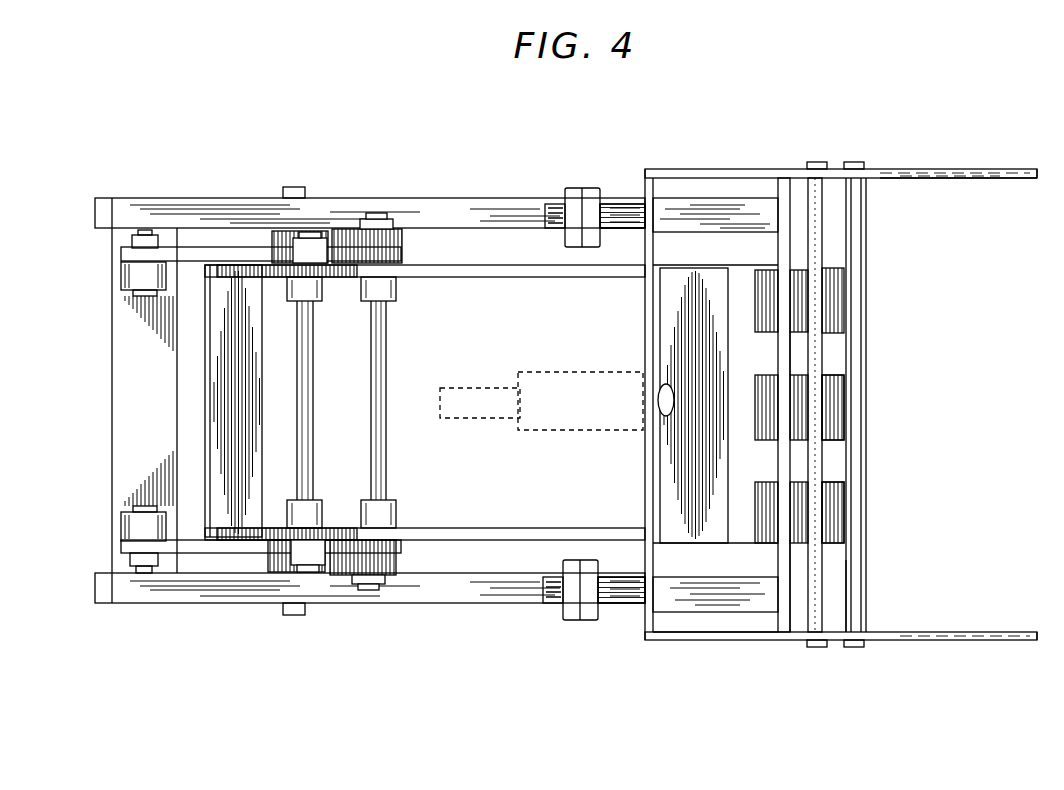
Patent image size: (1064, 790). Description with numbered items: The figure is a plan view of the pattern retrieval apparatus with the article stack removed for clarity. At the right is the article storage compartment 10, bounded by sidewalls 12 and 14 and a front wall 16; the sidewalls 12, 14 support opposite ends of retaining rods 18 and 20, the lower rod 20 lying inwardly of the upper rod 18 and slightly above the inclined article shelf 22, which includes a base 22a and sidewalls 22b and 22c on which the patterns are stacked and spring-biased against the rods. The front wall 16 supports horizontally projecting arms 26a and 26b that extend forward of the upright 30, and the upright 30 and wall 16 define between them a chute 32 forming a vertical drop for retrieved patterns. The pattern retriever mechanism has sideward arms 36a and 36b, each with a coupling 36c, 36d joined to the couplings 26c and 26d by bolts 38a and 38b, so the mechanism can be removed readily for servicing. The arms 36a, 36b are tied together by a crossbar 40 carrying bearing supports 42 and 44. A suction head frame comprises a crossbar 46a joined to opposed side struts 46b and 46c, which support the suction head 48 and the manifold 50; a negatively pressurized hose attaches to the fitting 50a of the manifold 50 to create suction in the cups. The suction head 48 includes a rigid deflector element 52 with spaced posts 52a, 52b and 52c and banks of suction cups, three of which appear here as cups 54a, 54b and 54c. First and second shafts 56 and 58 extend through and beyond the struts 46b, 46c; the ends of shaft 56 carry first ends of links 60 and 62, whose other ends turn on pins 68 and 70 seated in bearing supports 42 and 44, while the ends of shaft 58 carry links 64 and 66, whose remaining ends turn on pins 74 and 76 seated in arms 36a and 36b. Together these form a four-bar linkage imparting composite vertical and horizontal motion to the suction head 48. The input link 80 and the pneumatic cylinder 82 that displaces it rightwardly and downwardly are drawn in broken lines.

The article storage compartment 10 is at (822, 485).
The sidewall 12 is at (1032, 200).
The sidewall 14 is at (1032, 642).
The front wall 16 is at (783, 190).
The upper retaining rod 18 is at (808, 616).
The lower retaining rod 20 is at (852, 582).
The inclined article shelf 22 is at (893, 215).
The shelf base 22a is at (866, 500).
The shelf sidewall 22b is at (935, 180).
The shelf sidewall 22c is at (945, 630).
The horizontally projecting arm 26a is at (626, 206).
The horizontally projecting arm 26b is at (620, 600).
The coupling 26c is at (592, 188).
The coupling 26d is at (590, 620).
The upright 30 is at (645, 325).
The chute 32 is at (715, 577).
The sideward arm 36a is at (444, 206).
The sideward arm 36b is at (446, 598).
The coupling 36c is at (572, 188).
The coupling 36d is at (575, 620).
The bolt 38a is at (549, 210).
The bolt 38b is at (548, 598).
The crossbar 40 is at (112, 384).
The bearing support 42 is at (121, 284).
The bearing support 44 is at (121, 526).
The suction head frame crossbar 46a is at (245, 370).
The side strut 46b is at (425, 278).
The side strut 46c is at (430, 527).
The suction head 48 is at (848, 321).
The manifold 50 is at (708, 282).
The fitting 50a is at (664, 416).
The rigid deflector element 52 is at (797, 258).
The post 52a is at (797, 300).
The post 52b is at (832, 403).
The post 52c is at (832, 522).
The suction cup 54a is at (822, 264).
The suction cup 54b is at (822, 370).
The suction cup 54c is at (822, 478).
The first shaft 56 is at (314, 415).
The second shaft 58 is at (376, 468).
The link 60 is at (222, 255).
The link 62 is at (222, 548).
The link 64 is at (402, 248).
The link 66 is at (396, 560).
The pin 68 is at (145, 234).
The pin 70 is at (145, 574).
The pin 74 is at (294, 187).
The pin 76 is at (294, 616).
The link 80 is at (485, 382).
The pneumatic cylinder 82 is at (568, 372).